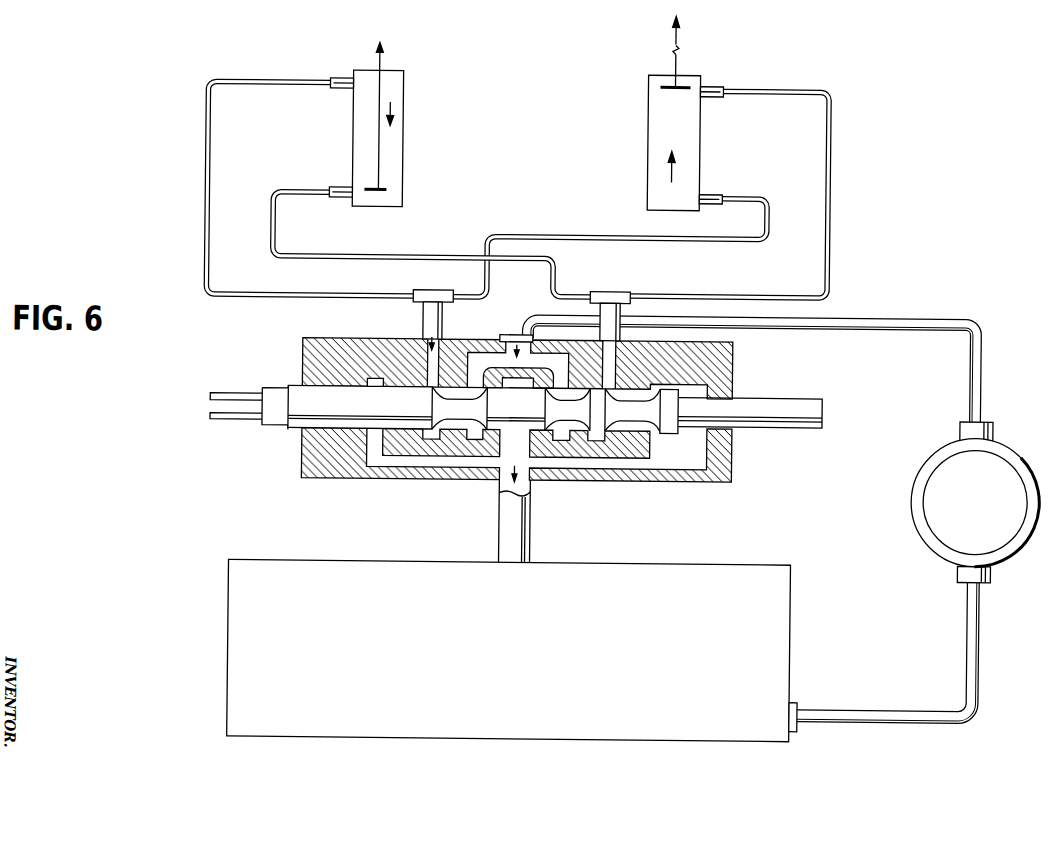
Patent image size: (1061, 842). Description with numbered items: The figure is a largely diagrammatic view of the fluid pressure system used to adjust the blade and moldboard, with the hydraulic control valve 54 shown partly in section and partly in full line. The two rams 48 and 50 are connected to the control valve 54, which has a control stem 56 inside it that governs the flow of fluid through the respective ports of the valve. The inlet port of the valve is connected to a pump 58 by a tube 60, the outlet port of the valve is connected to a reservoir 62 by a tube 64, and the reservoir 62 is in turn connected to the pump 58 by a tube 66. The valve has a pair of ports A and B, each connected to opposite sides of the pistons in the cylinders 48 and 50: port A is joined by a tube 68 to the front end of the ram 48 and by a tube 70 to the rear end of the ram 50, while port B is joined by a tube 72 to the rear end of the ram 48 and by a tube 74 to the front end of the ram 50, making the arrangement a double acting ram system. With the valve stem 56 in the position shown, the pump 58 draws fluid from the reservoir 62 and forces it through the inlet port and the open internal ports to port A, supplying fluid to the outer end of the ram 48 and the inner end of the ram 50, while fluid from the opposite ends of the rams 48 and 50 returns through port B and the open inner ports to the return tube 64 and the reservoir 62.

The ram 48 is at (394, 141).
The ram 50 is at (692, 148).
The control valve 54 is at (735, 445).
The control stem 56 is at (813, 397).
The pump 58 is at (1029, 515).
The tube 60 is at (816, 329).
The reservoir 62 is at (642, 565).
The tube 64 is at (526, 530).
The tube 66 is at (901, 721).
The tube 68 is at (201, 243).
The tube 70 is at (715, 239).
The tube 72 is at (556, 272).
The tube 74 is at (826, 219).